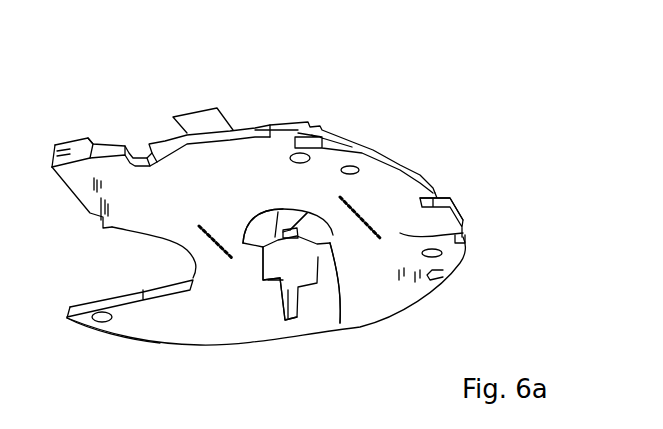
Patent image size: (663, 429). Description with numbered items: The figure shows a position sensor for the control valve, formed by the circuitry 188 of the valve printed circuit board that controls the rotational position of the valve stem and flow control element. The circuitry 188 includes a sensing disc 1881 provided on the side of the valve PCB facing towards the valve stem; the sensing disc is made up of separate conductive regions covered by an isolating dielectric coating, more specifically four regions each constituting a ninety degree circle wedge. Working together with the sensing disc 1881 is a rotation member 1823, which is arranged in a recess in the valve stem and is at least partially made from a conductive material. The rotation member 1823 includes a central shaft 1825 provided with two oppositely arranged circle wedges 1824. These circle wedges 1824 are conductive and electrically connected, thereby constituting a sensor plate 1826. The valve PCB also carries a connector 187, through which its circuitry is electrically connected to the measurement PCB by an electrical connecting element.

The connector 187 is at (392, 297).
The circuitry 188 is at (287, 213).
The sensing disc 1881 is at (320, 217).
The circle wedges 1824 is at (268, 232).
The sensor plate 1826 is at (331, 258).
The central shaft 1825 is at (290, 300).
The rotation member 1823 is at (290, 298).